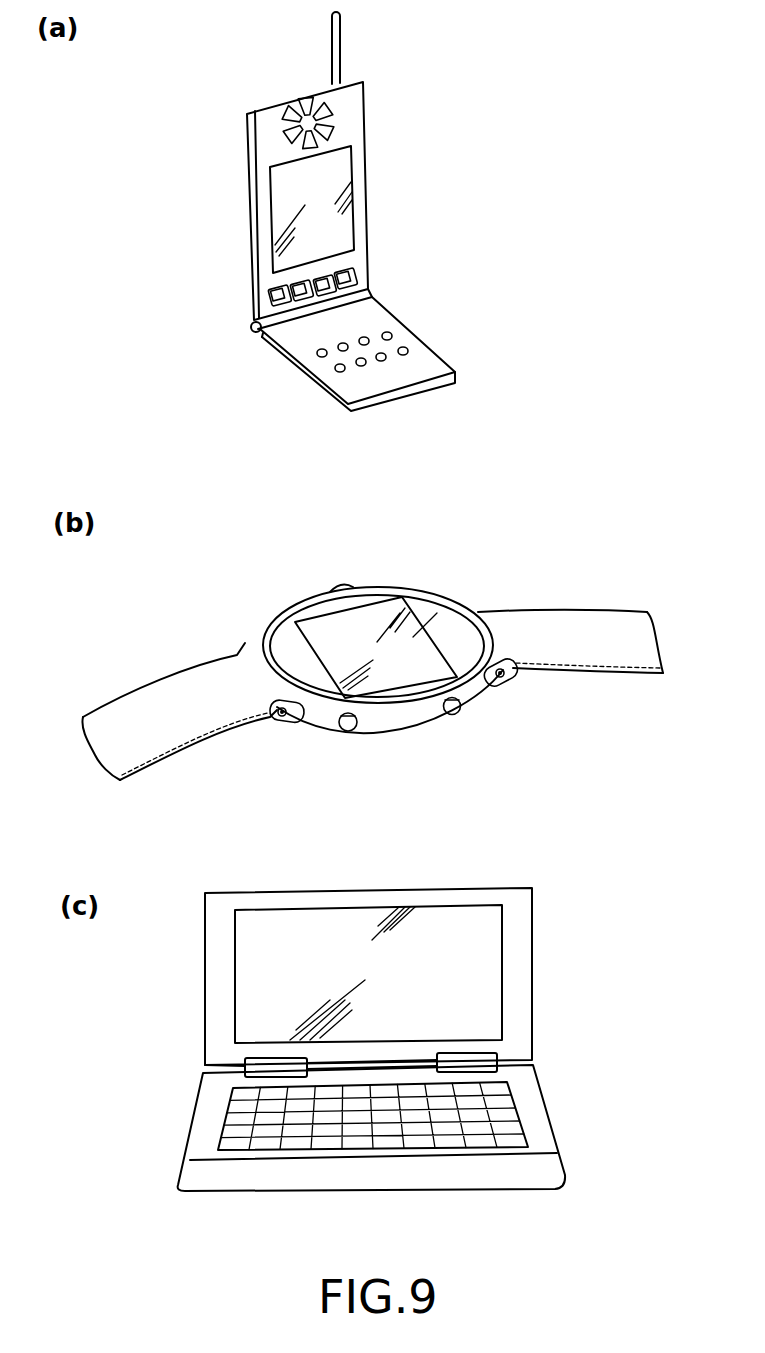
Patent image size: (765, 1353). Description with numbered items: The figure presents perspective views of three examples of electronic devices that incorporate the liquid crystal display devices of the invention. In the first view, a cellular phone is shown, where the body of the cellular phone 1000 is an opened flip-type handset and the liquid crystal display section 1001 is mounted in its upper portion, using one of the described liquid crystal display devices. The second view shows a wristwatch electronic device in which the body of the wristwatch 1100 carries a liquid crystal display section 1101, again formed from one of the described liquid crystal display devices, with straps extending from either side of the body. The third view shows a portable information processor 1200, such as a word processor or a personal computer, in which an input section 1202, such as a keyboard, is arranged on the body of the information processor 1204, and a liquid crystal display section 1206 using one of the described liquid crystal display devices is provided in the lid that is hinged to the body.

The body of the cellular phone 1000 is at (384, 211).
The liquid crystal display section 1001 is at (335, 221).
The body of the wristwatch 1100 is at (372, 633).
The liquid crystal display section 1101 is at (412, 643).
The information processor 1200 is at (385, 1019).
The input section 1202 is at (238, 1118).
The body of the information processor 1204 is at (527, 1170).
The liquid crystal display section 1206 is at (488, 1018).